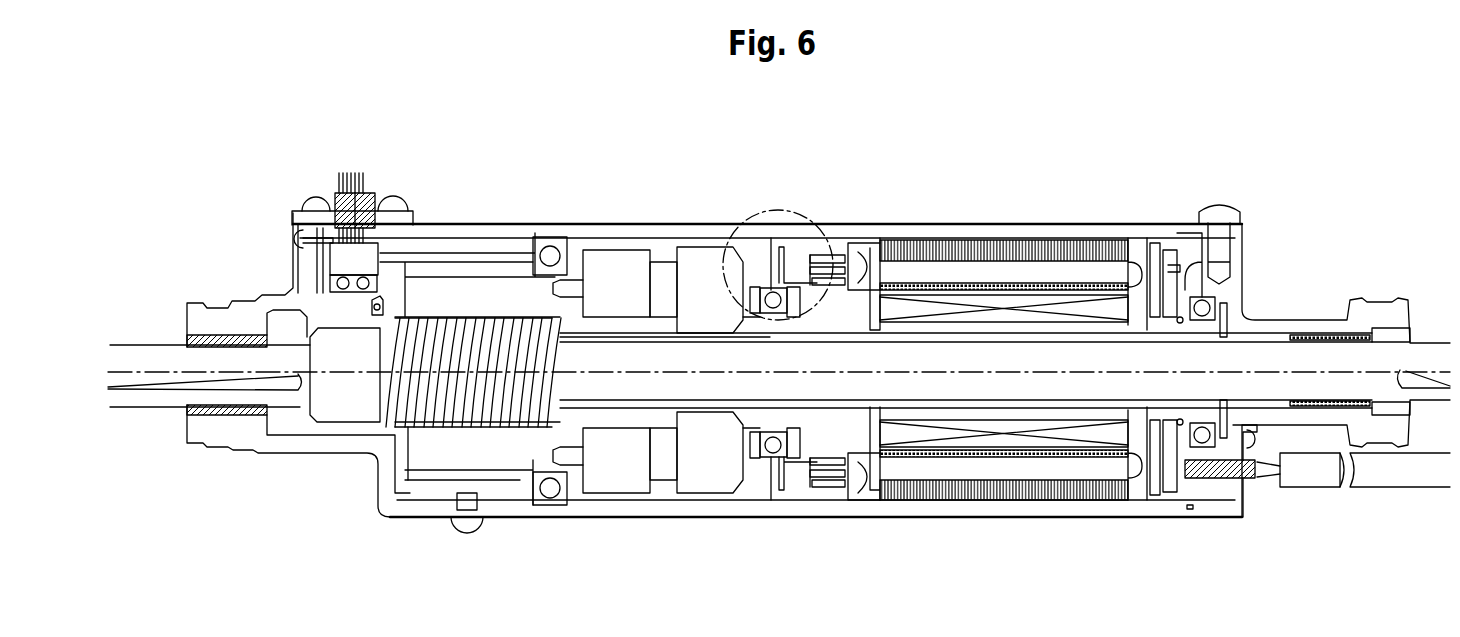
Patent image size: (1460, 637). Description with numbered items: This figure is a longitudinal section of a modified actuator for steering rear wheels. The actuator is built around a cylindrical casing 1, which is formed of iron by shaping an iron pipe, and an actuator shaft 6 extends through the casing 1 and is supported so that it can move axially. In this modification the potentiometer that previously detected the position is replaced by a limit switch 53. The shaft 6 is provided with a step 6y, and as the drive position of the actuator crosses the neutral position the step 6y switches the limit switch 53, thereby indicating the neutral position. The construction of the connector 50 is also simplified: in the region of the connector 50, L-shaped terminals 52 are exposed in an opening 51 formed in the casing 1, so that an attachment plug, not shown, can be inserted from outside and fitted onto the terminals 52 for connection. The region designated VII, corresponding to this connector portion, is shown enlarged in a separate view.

The casing 1 is at (1003, 233).
The actuator shaft 6 is at (200, 362).
The step 6y is at (317, 322).
The connector 50 is at (799, 219).
The opening 51 is at (785, 232).
The L-shaped terminals 52 is at (783, 245).
The limit switch 53 is at (375, 258).
The region VII is at (812, 222).